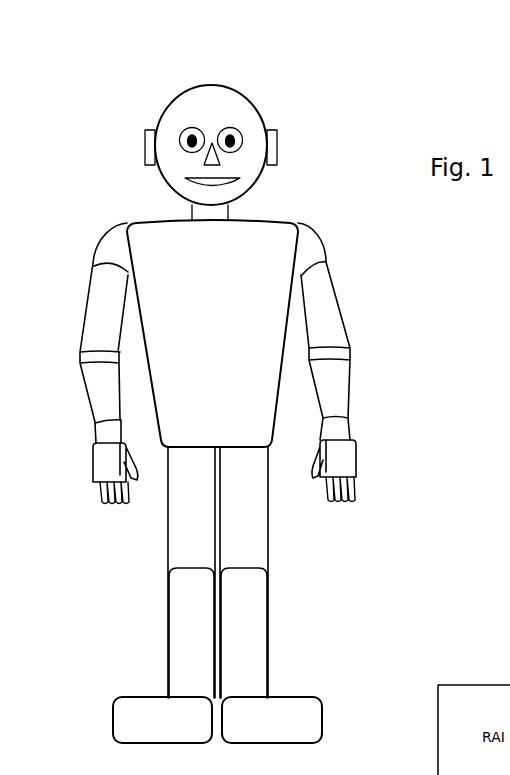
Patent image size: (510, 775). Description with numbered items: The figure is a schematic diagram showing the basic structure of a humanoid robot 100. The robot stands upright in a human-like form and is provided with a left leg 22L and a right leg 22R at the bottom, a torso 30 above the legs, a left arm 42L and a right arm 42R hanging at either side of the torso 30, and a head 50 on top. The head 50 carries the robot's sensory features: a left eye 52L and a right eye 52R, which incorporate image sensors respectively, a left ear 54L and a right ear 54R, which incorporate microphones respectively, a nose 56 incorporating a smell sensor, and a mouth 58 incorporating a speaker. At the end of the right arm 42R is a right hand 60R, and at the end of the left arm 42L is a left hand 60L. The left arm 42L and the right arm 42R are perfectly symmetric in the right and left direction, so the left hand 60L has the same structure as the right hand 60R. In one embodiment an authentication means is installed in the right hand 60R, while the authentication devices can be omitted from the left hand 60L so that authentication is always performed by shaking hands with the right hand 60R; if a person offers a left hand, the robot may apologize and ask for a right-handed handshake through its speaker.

The humanoid robot 100 is at (305, 30).
The head 50 is at (190, 87).
The right eye 52R is at (183, 131).
The left eye 52L is at (237, 130).
The right ear 54R is at (143, 132).
The left ear 54L is at (277, 137).
The nose 56 is at (203, 160).
The mouth 58 is at (242, 180).
The torso 30 is at (243, 240).
The right arm 42R is at (87, 290).
The left arm 42L is at (343, 303).
The right hand 60R is at (92, 460).
The left hand 60L is at (358, 457).
The right leg 22R is at (168, 615).
The left leg 22L is at (268, 622).